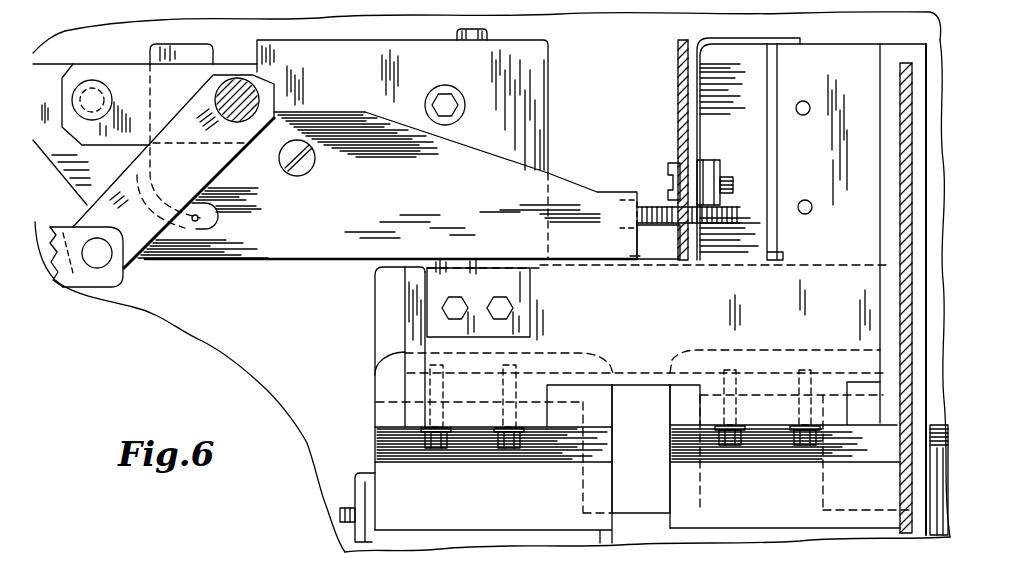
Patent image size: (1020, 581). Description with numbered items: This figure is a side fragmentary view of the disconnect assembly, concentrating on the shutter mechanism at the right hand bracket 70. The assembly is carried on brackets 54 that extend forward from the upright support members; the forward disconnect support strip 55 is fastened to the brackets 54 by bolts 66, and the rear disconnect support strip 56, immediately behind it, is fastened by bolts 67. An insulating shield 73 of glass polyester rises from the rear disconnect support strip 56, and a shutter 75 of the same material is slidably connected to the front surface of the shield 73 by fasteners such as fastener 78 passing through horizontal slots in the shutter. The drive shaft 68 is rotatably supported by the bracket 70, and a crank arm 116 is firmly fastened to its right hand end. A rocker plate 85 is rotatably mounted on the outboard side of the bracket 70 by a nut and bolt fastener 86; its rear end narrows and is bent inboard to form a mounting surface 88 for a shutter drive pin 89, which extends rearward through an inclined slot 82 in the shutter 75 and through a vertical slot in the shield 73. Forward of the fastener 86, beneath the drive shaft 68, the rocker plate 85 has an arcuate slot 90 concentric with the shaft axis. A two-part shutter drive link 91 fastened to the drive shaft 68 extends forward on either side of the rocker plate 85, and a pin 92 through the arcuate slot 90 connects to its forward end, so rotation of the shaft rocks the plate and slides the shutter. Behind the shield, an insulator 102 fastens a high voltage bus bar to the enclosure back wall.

The brackets 54 is at (803, 320).
The forward disconnect support strip 55 is at (387, 453).
The rear disconnect support strip 56 is at (683, 480).
The bolts 66 is at (510, 445).
The bolts 67 is at (805, 445).
The drive shaft 68 is at (240, 86).
The right hand bracket 70 is at (466, 71).
The insulating shield 73 is at (702, 128).
The shutter 75 is at (678, 80).
The fastener 78 is at (671, 163).
The inclined slot 82 is at (663, 229).
The rocker plate 85 is at (410, 198).
The nut and bolt fastener 86 is at (297, 178).
The mounting surface 88 is at (641, 258).
The shutter drive pin 89 is at (648, 206).
The arcuate slot 90 is at (197, 229).
The two-part shutter drive link 91 is at (160, 75).
The pin 92 is at (97, 81).
The insulator 102 is at (940, 425).
The crank arm 116 is at (72, 313).